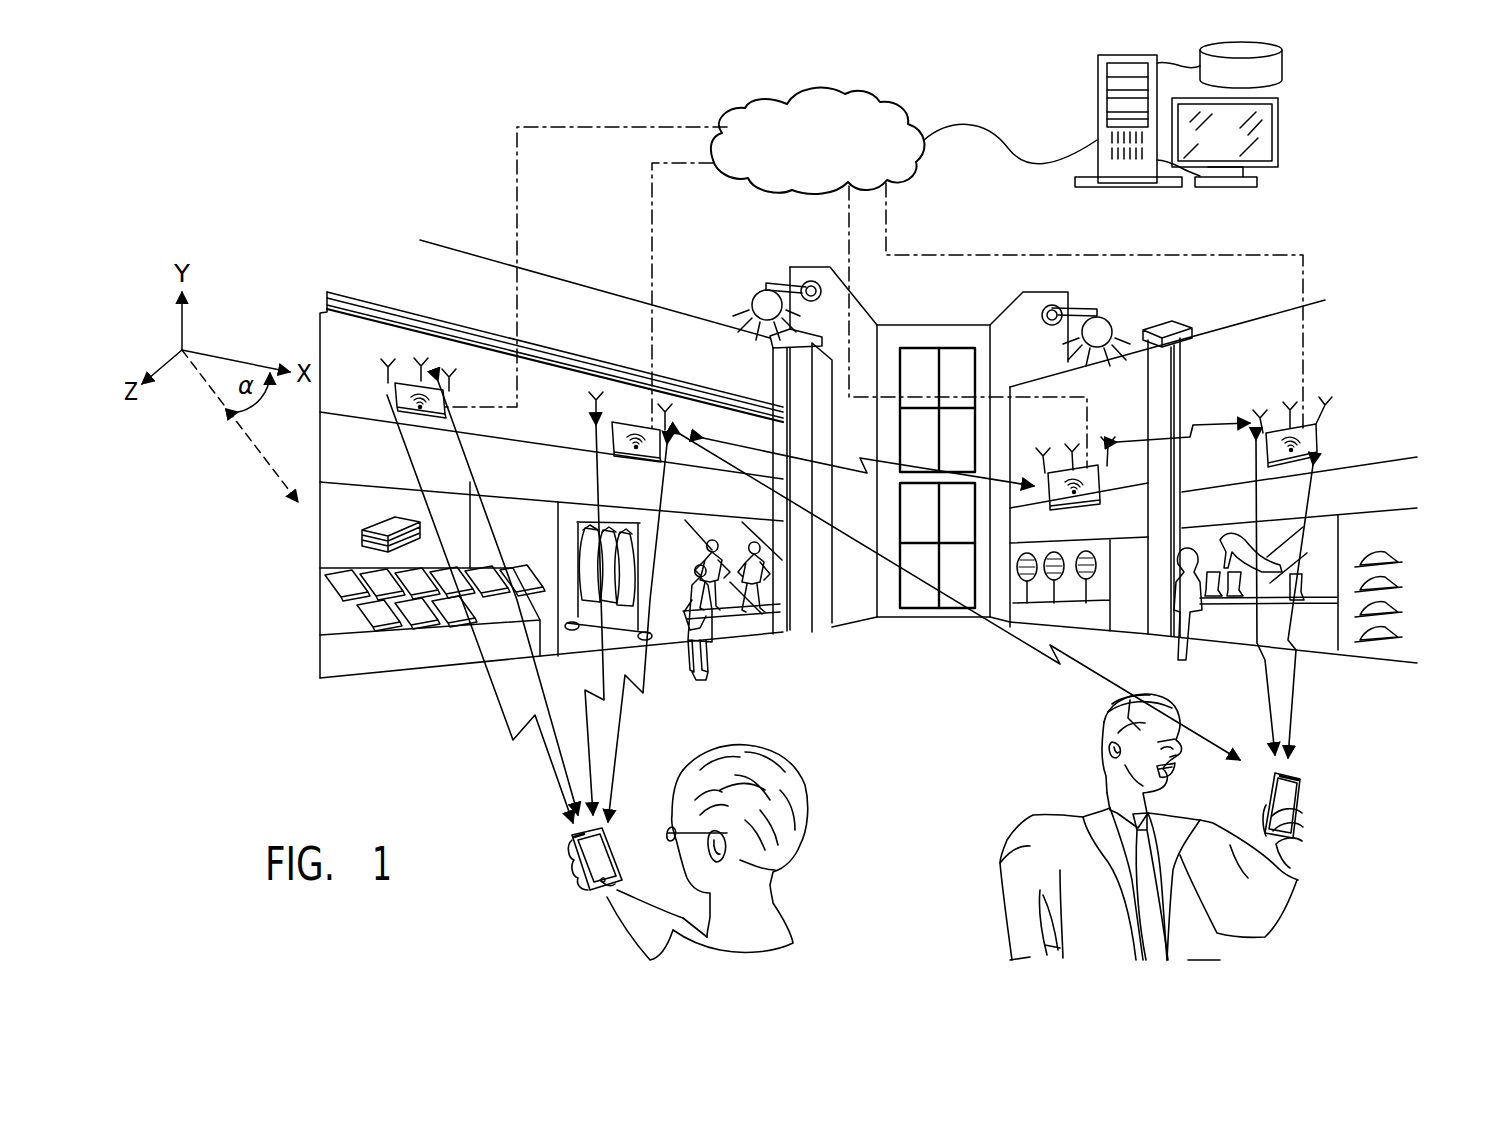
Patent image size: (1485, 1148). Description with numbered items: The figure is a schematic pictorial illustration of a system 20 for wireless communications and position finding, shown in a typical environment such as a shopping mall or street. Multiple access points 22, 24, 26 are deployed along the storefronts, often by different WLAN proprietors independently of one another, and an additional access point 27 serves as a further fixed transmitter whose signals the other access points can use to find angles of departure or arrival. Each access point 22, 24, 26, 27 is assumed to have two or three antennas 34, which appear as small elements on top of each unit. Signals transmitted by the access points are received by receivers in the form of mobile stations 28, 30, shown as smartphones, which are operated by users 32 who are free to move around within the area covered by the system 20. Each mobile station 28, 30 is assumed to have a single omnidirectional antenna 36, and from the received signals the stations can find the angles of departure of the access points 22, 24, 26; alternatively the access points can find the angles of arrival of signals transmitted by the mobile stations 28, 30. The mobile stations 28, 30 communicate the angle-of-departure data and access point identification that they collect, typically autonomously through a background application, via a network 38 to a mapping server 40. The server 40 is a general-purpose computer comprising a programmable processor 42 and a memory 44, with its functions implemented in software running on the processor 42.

The system 20 is at (1372, 308).
The access point 22 is at (430, 388).
The access point 24 is at (632, 422).
The access point 26 is at (1318, 442).
The additional access point 27 is at (1100, 492).
The mobile station 28 is at (1263, 778).
The mobile station 30 is at (617, 822).
The user 32 is at (790, 923).
The antenna 34 is at (1334, 372).
The omnidirectional antenna 36 is at (570, 838).
The network 38 is at (904, 111).
The mapping server 40 is at (1290, 200).
The programmable processor 42 is at (1098, 88).
The memory 44 is at (1284, 62).